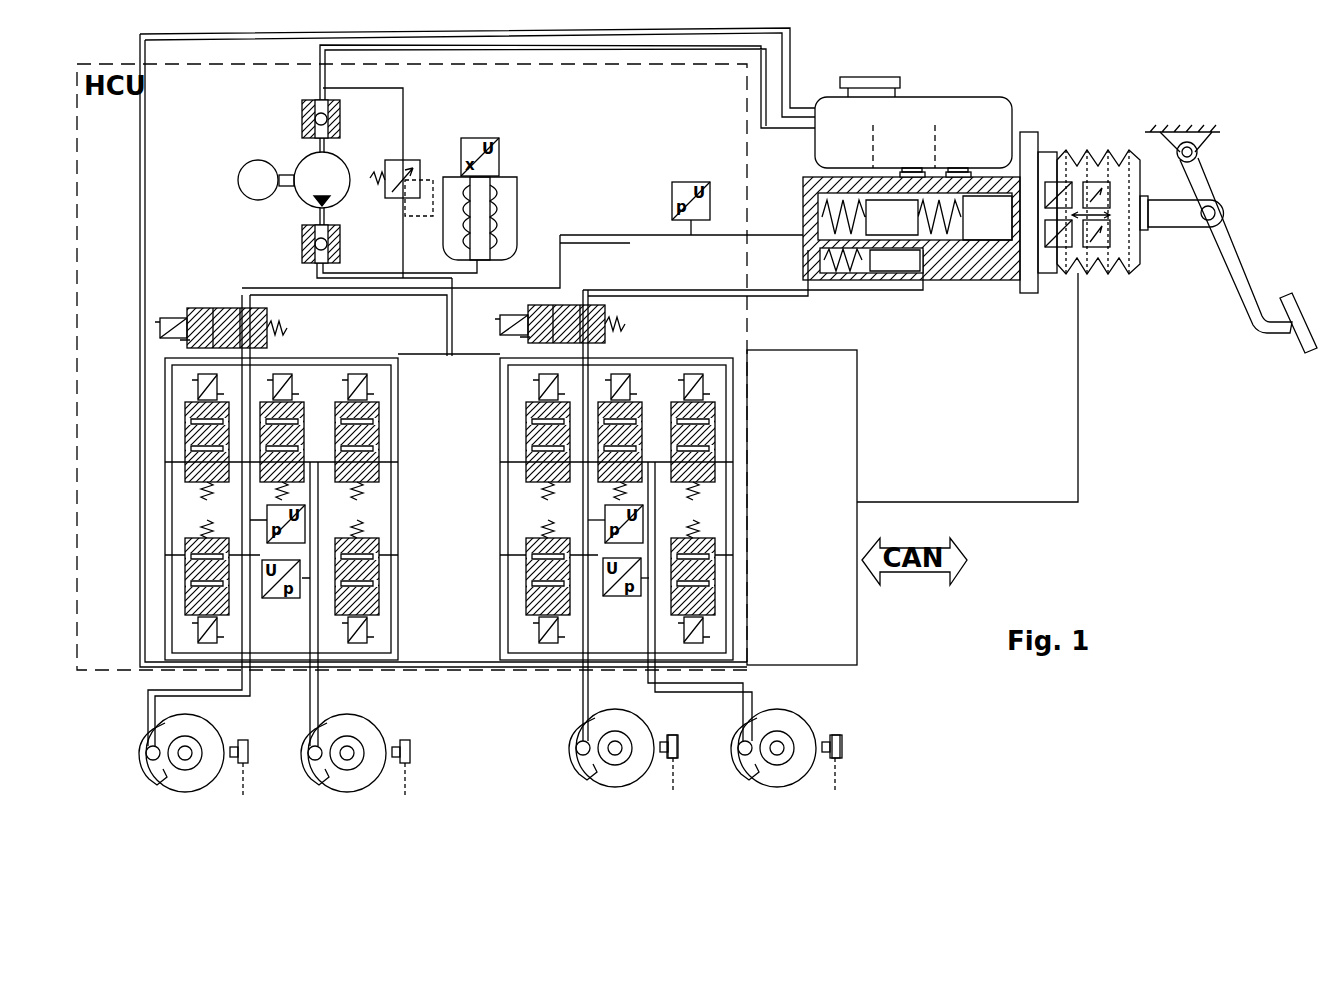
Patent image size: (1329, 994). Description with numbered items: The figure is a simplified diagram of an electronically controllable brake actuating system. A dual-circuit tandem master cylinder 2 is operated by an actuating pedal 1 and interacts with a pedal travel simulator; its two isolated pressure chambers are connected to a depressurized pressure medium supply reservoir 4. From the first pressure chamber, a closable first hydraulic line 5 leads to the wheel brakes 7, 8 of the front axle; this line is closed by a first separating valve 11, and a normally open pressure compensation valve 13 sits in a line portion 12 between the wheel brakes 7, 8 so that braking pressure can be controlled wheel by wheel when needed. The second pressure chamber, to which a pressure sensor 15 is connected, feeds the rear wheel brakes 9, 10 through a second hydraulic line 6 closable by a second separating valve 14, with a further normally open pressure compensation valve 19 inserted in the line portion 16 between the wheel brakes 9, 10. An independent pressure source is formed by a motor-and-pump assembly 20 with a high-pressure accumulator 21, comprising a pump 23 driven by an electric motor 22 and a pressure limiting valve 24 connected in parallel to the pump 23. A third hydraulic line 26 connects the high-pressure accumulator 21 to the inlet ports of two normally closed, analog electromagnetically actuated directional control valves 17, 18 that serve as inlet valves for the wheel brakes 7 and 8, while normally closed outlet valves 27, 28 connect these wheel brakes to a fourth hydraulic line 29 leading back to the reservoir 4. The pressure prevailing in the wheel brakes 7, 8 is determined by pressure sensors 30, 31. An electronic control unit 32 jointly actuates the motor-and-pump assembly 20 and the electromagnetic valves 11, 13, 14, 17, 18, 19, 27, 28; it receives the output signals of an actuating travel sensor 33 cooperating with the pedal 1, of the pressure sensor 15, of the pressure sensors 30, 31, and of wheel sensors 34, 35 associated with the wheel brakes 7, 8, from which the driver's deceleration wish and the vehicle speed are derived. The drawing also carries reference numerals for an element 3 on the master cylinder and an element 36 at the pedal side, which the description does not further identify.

The actuating pedal 1 is at (1228, 256).
The tandem master cylinder 2 is at (993, 284).
The master cylinder piston / secondary chamber 3 is at (840, 272).
The pressure medium supply reservoir 4 is at (948, 130).
The first hydraulic line 5 is at (640, 292).
The second hydraulic line 6 is at (617, 236).
The wheel brake 7 is at (583, 785).
The wheel brake 8 is at (746, 785).
The wheel brake 9 is at (152, 787).
The wheel brake 10 is at (313, 787).
The first separating valve 11 is at (580, 298).
The line portion 12 is at (648, 463).
The pressure compensation valve 13 is at (633, 398).
The second separating valve 14 is at (268, 312).
The pressure sensor 15 is at (691, 182).
The line portion 16 is at (305, 463).
The directional control valve 17 is at (535, 428).
The directional control valve 18 is at (715, 440).
The pressure compensation valve 19 is at (303, 400).
The motor-and-pump assembly 20 is at (284, 190).
The high-pressure accumulator 21 is at (508, 212).
The electric motor 22 is at (243, 172).
The pump 23 is at (336, 172).
The pressure limiting valve 24 is at (418, 162).
The third hydraulic line 26 is at (447, 330).
The outlet valve 27 is at (535, 580).
The outlet valve 28 is at (715, 578).
The fourth hydraulic line 29 is at (425, 656).
The pressure sensor 30 is at (593, 510).
The pressure sensor 31 is at (612, 598).
The electronic control unit 32 is at (837, 437).
The actuating travel sensor 33 is at (1058, 182).
The wheel sensor 34 is at (680, 745).
The wheel sensor 35 is at (845, 745).
The pedal travel simulator / bellows 36 is at (1100, 252).